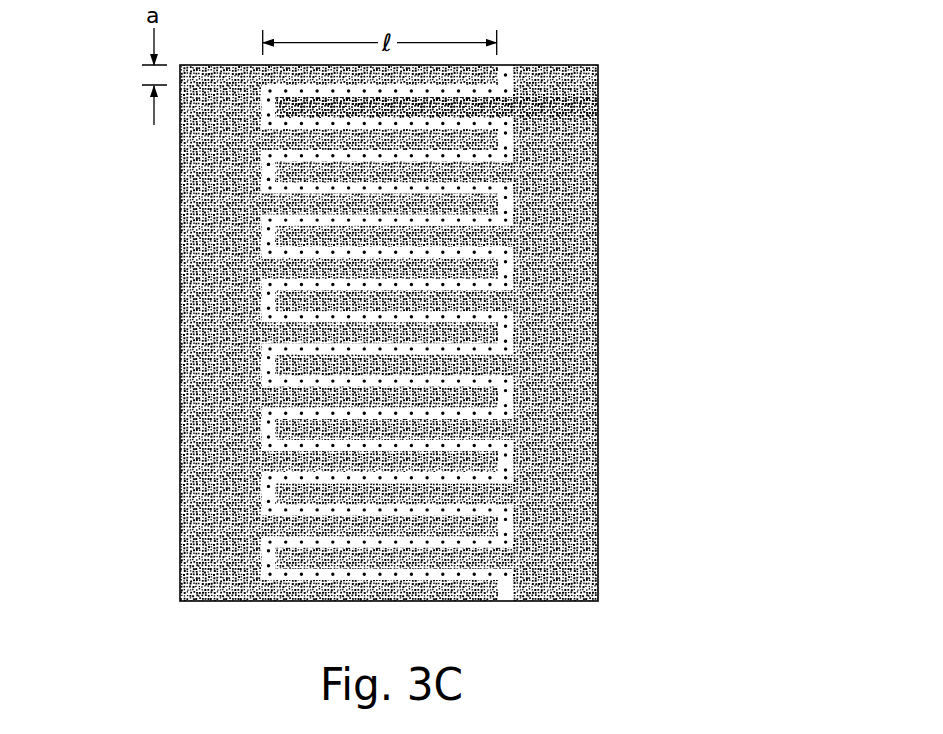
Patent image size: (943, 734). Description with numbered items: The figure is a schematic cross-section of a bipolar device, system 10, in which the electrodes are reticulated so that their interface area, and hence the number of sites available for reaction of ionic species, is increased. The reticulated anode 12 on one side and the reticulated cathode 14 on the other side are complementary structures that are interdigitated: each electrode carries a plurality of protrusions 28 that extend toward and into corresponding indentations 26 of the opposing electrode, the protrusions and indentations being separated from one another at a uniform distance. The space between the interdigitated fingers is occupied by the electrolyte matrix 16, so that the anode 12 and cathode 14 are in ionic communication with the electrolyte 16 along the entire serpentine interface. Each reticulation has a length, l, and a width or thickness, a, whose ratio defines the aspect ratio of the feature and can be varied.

The system 10 is at (100, 100).
The reticulated anode 12 is at (180, 553).
The reticulated cathode 14 is at (557, 602).
The electrolyte matrix 16 is at (438, 577).
The indentation 26 is at (265, 180).
The protrusion 28 is at (280, 104).